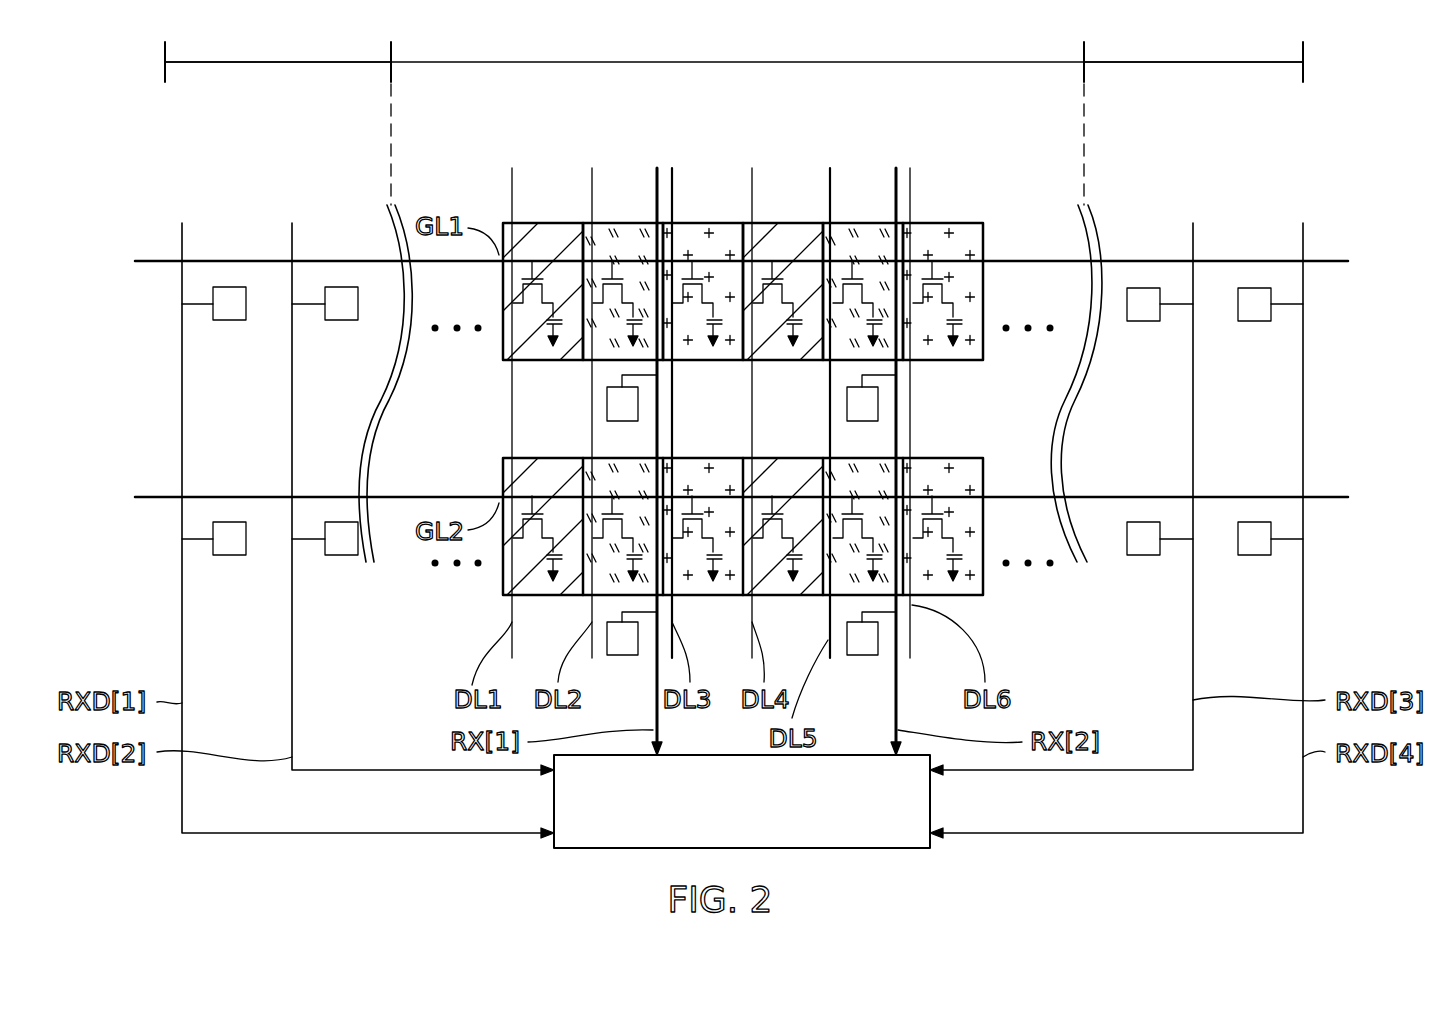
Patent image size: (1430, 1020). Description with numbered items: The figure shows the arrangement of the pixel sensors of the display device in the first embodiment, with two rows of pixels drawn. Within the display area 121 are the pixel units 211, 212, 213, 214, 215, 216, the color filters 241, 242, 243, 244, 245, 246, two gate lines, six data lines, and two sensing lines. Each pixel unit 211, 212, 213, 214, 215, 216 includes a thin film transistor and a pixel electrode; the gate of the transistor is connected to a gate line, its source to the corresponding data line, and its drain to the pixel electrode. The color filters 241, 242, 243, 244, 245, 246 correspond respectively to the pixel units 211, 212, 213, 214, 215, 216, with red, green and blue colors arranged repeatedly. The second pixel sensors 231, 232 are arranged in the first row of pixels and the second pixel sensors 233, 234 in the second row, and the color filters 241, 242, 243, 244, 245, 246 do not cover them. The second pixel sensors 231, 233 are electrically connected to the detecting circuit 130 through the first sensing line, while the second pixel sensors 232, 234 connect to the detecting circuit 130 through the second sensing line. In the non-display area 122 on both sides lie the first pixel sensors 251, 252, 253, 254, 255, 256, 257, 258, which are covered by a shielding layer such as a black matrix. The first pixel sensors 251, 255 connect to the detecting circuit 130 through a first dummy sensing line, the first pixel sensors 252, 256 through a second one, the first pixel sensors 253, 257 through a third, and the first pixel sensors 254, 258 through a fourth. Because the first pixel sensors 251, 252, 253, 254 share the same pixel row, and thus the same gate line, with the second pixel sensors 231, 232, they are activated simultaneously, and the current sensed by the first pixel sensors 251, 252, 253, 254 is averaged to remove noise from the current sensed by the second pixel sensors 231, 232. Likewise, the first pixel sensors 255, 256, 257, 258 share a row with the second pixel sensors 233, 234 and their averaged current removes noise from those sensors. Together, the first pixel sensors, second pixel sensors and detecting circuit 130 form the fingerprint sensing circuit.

The display area 121 is at (735, 60).
The non-display area 122 is at (287, 60).
The detecting circuit 130 is at (930, 800).
The pixel unit 211 is at (555, 293).
The pixel unit 212 is at (635, 293).
The pixel unit 213 is at (715, 293).
The pixel unit 214 is at (795, 293).
The pixel unit 215 is at (875, 293).
The pixel unit 216 is at (955, 293).
The second pixel sensor 231 is at (607, 405).
The second pixel sensor 232 is at (878, 405).
The second pixel sensor 233 is at (625, 657).
The second pixel sensor 234 is at (865, 657).
The color filter 241 is at (533, 223).
The color filter 242 is at (617, 223).
The color filter 243 is at (697, 223).
The color filter 244 is at (777, 223).
The color filter 245 is at (857, 223).
The color filter 246 is at (937, 223).
The first pixel sensor 251 is at (230, 321).
The first pixel sensor 252 is at (341, 321).
The first pixel sensor 253 is at (1143, 321).
The first pixel sensor 254 is at (1254, 321).
The first pixel sensor 255 is at (230, 556).
The first pixel sensor 256 is at (341, 556).
The first pixel sensor 257 is at (1143, 556).
The first pixel sensor 258 is at (1254, 556).